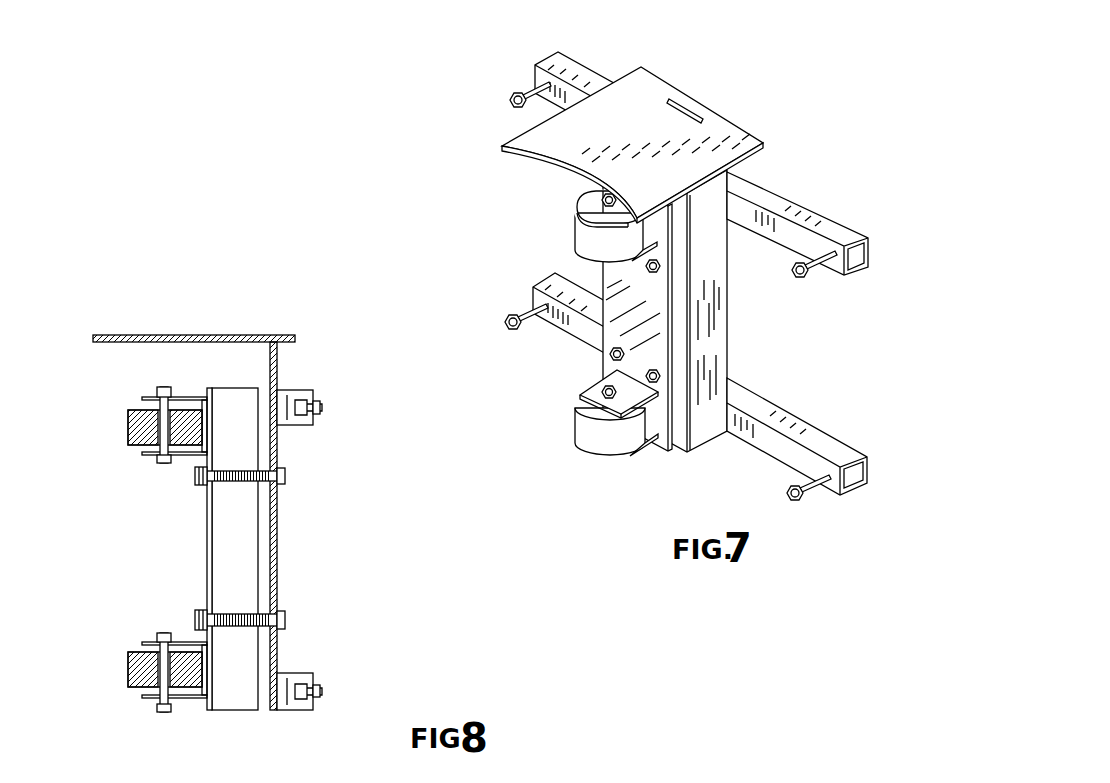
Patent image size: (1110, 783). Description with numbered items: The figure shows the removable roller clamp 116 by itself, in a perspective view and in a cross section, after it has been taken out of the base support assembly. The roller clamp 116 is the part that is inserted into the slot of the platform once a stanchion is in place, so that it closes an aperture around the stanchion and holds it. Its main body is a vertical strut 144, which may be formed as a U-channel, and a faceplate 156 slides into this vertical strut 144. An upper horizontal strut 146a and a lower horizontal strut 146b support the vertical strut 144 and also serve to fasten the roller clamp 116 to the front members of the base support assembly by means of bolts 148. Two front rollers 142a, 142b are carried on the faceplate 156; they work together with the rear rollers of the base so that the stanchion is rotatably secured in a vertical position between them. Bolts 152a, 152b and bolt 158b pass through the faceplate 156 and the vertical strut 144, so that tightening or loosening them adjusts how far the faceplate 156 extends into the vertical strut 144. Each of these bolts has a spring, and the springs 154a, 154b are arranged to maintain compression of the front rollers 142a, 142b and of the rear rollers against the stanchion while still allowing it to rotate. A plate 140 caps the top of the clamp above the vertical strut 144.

In FIG. 7, the roller clamp 116 is at (785, 84).
In FIG. 7, the top mounting plate 140 is at (650, 94).
In FIG. 8, the top mounting plate 140 is at (213, 333).
In FIG. 7, the front roller 142a is at (580, 236).
In FIG. 8, the front roller 142a is at (132, 432).
In FIG. 7, the front roller 142b is at (590, 437).
In FIG. 8, the front roller 142b is at (132, 672).
In FIG. 7, the vertical strut 144 is at (719, 332).
In FIG. 8, the vertical strut 144 is at (235, 698).
In FIG. 7, the upper horizontal strut 146a is at (777, 197).
In FIG. 8, the upper horizontal strut 146a is at (293, 392).
In FIG. 7, the lower horizontal strut 146b is at (833, 450).
In FIG. 8, the lower horizontal strut 146b is at (290, 710).
In FIG. 7, the bolt 148 is at (511, 100).
In FIG. 8, the bolt 148 is at (320, 412).
In FIG. 7, the bolt 152a is at (660, 267).
In FIG. 8, the bolt 152a is at (193, 478).
In FIG. 7, the bolt 152b is at (661, 376).
In FIG. 8, the bolt 152b is at (193, 622).
In FIG. 8, the spring 154a is at (245, 483).
In FIG. 8, the spring 154b is at (245, 620).
In FIG. 7, the faceplate 156 is at (668, 448).
In FIG. 8, the faceplate 156 is at (207, 540).
In FIG. 7, the bolt 158b is at (609, 356).